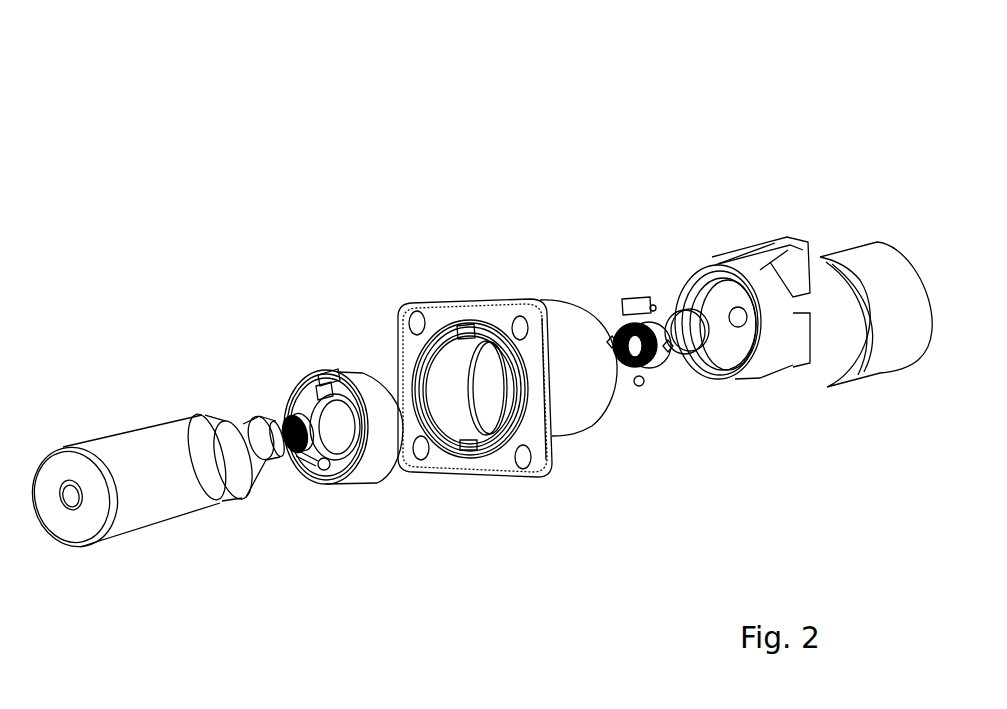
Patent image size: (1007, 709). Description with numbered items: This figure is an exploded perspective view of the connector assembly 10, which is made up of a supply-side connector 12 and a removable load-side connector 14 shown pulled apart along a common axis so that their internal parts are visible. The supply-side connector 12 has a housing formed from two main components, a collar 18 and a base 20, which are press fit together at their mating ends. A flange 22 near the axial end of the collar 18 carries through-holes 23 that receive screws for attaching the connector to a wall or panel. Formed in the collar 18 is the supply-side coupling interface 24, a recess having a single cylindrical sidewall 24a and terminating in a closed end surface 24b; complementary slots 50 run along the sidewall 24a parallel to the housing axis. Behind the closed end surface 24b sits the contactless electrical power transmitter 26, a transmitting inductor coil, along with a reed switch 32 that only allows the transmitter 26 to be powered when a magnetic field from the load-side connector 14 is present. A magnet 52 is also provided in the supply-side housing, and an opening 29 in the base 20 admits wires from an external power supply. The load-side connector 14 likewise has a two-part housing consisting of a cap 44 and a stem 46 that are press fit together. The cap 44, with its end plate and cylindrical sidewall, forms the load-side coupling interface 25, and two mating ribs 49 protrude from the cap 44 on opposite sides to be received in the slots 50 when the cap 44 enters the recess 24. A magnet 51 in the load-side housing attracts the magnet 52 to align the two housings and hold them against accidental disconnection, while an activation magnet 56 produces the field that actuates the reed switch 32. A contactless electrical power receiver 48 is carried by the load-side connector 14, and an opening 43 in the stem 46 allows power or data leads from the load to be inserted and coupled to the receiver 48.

The connector assembly 10 is at (523, 100).
The supply-side connector 12 is at (873, 157).
The load-side connector 14 is at (358, 257).
The collar 18 is at (563, 437).
The base 20 is at (818, 242).
The flange 22 is at (500, 470).
The through-holes 23 is at (525, 458).
The supply-side coupling interface 24 is at (472, 418).
The sidewall 24a is at (443, 380).
The closed end surface 24b is at (490, 364).
The load-side coupling interface 25 is at (373, 460).
The contactless electrical power transmitter 26 is at (650, 363).
The opening 29 is at (738, 318).
The reed switch 32 is at (639, 298).
The opening 43 is at (73, 500).
The cap 44 is at (368, 372).
The stem 46 is at (135, 435).
The contactless electrical power receiver 48 is at (290, 452).
The mating ribs 49 is at (322, 365).
The slots 50 is at (463, 330).
The magnet 51 is at (320, 468).
The magnet 52 is at (638, 387).
The activation magnet 56 is at (323, 395).